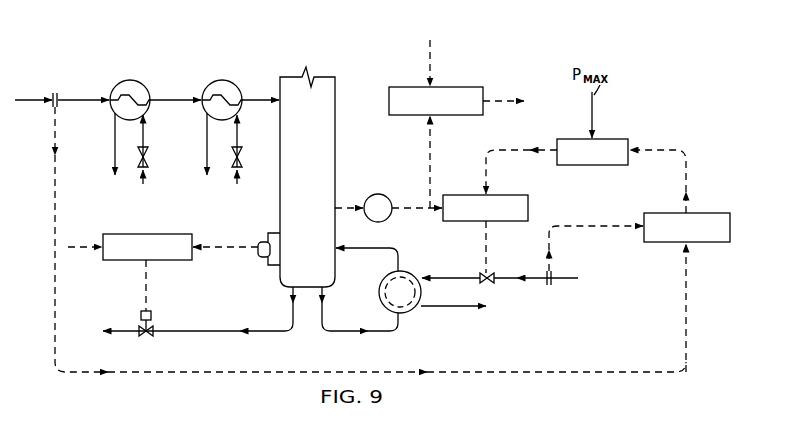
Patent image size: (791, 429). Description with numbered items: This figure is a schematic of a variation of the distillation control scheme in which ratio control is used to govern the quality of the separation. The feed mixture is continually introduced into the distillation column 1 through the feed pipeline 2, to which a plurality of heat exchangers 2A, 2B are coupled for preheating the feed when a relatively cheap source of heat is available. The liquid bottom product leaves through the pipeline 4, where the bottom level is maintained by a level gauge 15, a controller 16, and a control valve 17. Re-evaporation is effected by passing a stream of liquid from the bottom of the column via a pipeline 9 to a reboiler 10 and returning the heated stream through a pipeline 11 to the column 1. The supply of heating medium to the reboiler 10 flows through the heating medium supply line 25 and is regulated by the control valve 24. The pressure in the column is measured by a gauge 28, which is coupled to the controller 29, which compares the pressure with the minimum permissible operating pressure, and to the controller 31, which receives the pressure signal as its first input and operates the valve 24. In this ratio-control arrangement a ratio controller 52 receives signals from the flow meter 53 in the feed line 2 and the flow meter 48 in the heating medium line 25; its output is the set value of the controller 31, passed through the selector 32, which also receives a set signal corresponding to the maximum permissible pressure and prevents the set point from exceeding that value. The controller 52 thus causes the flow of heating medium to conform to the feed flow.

The distillation column 1 is at (313, 182).
The feed pipeline 2 is at (252, 99).
The heat exchanger 2A is at (117, 86).
The heat exchanger 2B is at (210, 86).
The bottom product pipeline 4 is at (220, 331).
The pipeline 9 is at (360, 330).
The reboiler 10 is at (407, 311).
The pipeline 11 is at (372, 249).
The level gauge 15 is at (258, 258).
The controller 16 is at (166, 234).
The control valve 17 is at (144, 336).
The control valve 24 is at (485, 273).
The heating medium supply line 25 is at (520, 279).
The pressure gauge 28 is at (387, 219).
The controller 29 is at (453, 87).
The controller 31 is at (510, 195).
The selector 32 is at (597, 165).
The flow meter 48 is at (547, 272).
The ratio controller 52 is at (702, 213).
The flow meter 53 is at (58, 92).